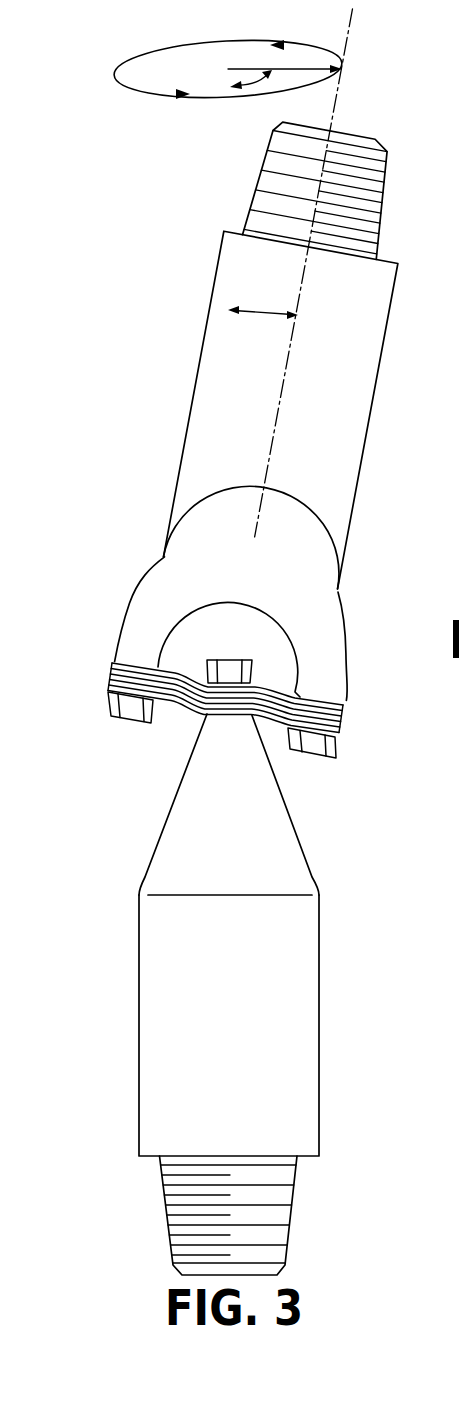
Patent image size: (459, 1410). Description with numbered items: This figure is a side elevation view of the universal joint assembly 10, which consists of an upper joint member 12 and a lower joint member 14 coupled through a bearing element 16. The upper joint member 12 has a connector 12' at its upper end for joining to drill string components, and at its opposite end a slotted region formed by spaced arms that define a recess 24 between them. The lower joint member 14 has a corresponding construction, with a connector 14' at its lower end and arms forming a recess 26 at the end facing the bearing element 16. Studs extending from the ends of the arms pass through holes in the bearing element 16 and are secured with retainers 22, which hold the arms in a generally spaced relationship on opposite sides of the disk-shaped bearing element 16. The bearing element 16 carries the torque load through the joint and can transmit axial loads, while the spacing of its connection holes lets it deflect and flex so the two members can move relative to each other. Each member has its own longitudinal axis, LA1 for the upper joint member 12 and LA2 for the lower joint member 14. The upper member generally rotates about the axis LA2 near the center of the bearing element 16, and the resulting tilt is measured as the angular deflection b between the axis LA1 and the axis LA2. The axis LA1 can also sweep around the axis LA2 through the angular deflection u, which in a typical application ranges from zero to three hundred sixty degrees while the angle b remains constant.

The universal joint assembly 10 is at (150, 306).
The upper joint member 12 is at (276, 465).
The connector 12' is at (347, 189).
The lower joint member 14 is at (219, 994).
The connector 14' is at (261, 1215).
The bearing element 16 is at (343, 718).
The retainers 22 is at (210, 659).
The recess 24 is at (271, 629).
The recess 26 is at (202, 788).
The longitudinal axis of the upper member LA1 is at (353, 24).
The longitudinal axis of the lower member LA2 is at (228, 15).
The angular deflection u is at (251, 88).
The angular deflection b is at (263, 293).